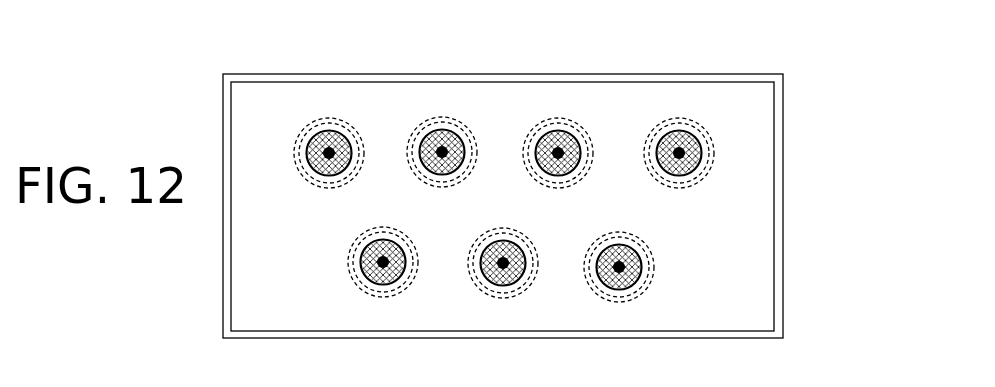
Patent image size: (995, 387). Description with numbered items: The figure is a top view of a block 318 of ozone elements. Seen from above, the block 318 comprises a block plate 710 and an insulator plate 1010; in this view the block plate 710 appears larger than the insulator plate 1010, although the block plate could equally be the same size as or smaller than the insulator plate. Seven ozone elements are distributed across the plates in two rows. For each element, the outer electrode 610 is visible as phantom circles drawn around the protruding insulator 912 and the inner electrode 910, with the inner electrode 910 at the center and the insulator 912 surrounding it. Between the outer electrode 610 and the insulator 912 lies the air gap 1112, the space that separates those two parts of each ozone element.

The block 318 is at (198, 90).
The block plate 710 is at (333, 74).
The insulator plate 1010 is at (407, 82).
The outer electrode 610 is at (555, 118).
The air gap 1112 is at (659, 142).
The insulator 912 is at (700, 137).
The inner electrode 910 is at (686, 153).